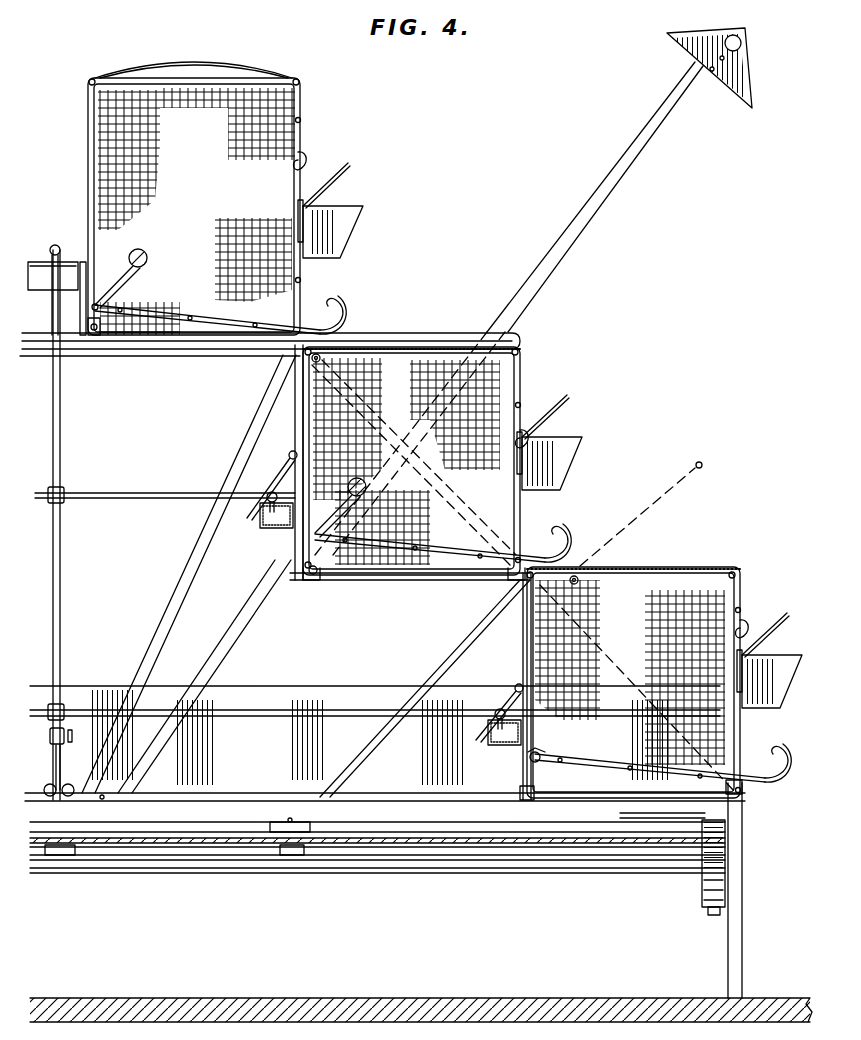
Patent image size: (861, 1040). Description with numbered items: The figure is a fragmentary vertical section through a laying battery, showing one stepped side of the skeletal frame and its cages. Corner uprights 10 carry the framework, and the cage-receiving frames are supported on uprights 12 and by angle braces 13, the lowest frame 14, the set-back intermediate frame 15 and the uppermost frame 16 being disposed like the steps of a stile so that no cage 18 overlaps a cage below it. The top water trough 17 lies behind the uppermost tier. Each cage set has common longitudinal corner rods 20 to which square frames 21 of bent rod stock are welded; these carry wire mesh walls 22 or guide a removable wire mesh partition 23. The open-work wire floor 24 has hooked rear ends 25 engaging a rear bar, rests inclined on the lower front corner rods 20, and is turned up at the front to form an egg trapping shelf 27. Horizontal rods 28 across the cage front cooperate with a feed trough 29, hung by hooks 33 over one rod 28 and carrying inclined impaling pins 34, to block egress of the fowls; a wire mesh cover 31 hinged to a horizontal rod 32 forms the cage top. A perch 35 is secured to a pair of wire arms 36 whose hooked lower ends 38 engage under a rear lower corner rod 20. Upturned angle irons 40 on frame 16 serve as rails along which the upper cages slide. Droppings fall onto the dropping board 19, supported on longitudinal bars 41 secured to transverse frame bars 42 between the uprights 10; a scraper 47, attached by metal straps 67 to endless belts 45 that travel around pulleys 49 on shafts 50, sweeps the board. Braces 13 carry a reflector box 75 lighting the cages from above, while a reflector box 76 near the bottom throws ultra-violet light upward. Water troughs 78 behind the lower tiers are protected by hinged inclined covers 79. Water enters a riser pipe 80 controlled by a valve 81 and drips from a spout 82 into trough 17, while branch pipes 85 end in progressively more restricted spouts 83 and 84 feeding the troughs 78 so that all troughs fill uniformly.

The corner upright 10 is at (745, 966).
The upright 12 is at (293, 416).
The angle brace 13 is at (180, 584).
The lowest frame 14 is at (520, 800).
The intermediate frame 15 is at (306, 584).
The uppermost frame 16 is at (92, 340).
The top water trough 17 is at (36, 262).
The cage 18 is at (240, 50).
The dropping board 19 is at (166, 840).
The corner rod 20 is at (88, 82).
The square frame 21 is at (185, 92).
The wire mesh wall 22 is at (385, 578).
The removable wire mesh partition 23 is at (162, 66).
The cage floor 24 is at (184, 312).
The hooked rear end 25 is at (542, 752).
The egg trapping shelf 27 is at (340, 308).
The horizontal rod 28 is at (302, 120).
The feed trough 29 is at (355, 225).
The wire mesh cover 31 is at (446, 347).
The horizontal rod 32 is at (322, 360).
The hook 33 is at (302, 166).
The impaling pin 34 is at (345, 170).
The perch 35 is at (146, 252).
The wire arm 36 is at (410, 508).
The hooked lower end 38 is at (322, 578).
The upturned angle iron 40 is at (392, 331).
The longitudinal bar 41 is at (284, 858).
The transverse frame bar 42 is at (190, 856).
The endless belt 45 is at (722, 914).
The scraper 47 is at (474, 842).
The pulley 49 is at (725, 884).
The shaft 50 is at (382, 872).
The metal strap 67 is at (665, 811).
The reflector box 75 is at (672, 34).
The reflector box 76 is at (90, 796).
The water trough 78 is at (258, 514).
The hinged inclined cover 79 is at (282, 470).
The riser pipe 80 is at (62, 612).
The valve 81 is at (64, 706).
The spout 82 is at (60, 262).
The spout 83 is at (268, 516).
The spout 84 is at (502, 708).
The branch pipe 85 is at (96, 492).